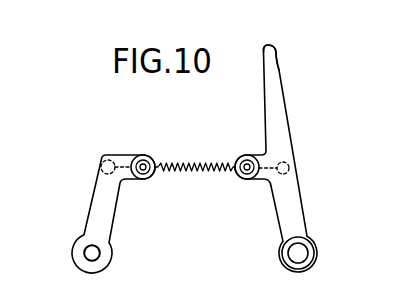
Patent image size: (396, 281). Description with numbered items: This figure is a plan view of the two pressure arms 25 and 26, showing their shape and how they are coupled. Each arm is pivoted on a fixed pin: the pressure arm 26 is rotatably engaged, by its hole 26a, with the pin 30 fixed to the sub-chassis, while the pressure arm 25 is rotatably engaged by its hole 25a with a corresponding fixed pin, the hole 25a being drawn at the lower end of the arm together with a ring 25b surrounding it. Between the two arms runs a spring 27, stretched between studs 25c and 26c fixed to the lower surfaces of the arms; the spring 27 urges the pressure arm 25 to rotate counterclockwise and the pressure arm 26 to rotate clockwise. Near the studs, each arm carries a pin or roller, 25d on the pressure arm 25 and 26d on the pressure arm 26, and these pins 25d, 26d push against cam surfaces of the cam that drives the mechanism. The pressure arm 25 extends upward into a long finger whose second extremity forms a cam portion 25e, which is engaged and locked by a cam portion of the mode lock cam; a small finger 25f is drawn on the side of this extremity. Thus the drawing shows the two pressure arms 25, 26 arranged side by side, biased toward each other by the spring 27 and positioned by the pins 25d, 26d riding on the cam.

The pressure arm 25 is at (299, 202).
The hole 25a is at (292, 255).
The bearing ring of lever 25b is at (304, 254).
The stud 25c is at (292, 168).
The pin 25d is at (244, 156).
The cam portion 25e is at (269, 44).
The finger of lever 25f is at (279, 67).
The pressure arm 26 is at (90, 200).
The hole 26a is at (98, 253).
The stud 26c is at (103, 153).
The pin 26d is at (144, 180).
The spring 27 is at (191, 164).
The pin 30 is at (92, 252).